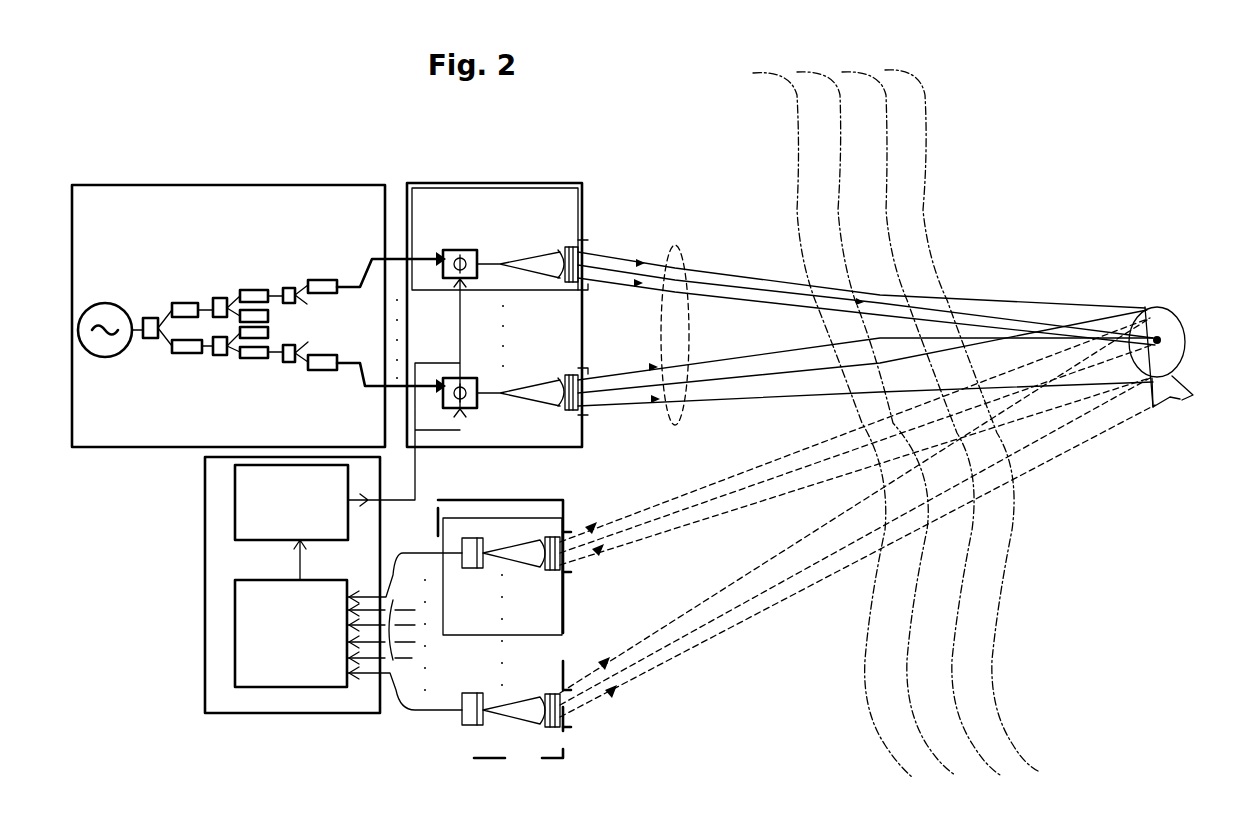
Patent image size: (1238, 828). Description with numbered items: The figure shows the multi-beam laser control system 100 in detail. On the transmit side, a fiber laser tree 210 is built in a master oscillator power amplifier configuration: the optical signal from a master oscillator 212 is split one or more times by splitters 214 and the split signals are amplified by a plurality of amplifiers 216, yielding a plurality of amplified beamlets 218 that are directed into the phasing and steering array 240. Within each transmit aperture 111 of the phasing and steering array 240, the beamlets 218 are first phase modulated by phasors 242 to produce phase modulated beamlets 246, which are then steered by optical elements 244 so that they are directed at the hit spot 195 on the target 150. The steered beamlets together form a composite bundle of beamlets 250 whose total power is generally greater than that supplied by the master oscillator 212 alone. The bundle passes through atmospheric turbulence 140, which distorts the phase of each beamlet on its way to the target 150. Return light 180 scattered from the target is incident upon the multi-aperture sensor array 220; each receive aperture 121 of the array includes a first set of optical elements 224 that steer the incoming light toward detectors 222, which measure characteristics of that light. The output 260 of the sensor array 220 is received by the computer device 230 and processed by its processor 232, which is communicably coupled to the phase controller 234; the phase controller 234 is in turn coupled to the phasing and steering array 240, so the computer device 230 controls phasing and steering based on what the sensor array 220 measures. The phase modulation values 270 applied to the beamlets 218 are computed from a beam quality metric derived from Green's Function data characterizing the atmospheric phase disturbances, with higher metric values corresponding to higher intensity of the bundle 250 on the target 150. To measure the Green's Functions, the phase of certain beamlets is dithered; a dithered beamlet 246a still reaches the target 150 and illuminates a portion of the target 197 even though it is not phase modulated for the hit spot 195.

The multi-beam laser control system 100 is at (86, 166).
The fiber laser tree 210 is at (272, 185).
The master oscillator 212 is at (90, 304).
The splitters 214 is at (147, 318).
The amplifiers 216 is at (186, 303).
The beamlets 218 is at (395, 257).
The phasing and steering array 240 is at (445, 183).
The transmit apertures 111 is at (520, 188).
The phasors 242 is at (455, 258).
The optical elements 244 is at (541, 251).
The phase modulated beamlets 246 is at (496, 258).
The dithered beamlet 246a is at (480, 408).
The composite bundle of beamlets 250 is at (686, 250).
The turbulence 140 is at (896, 407).
The target 150 is at (1170, 385).
The hit spot 195 is at (1160, 338).
The portion of the target 197 is at (1145, 307).
The return light 180 is at (1083, 420).
The computer device 230 is at (262, 713).
The processor 232 is at (291, 613).
The phase controller 234 is at (291, 502).
The phase modulation values 270 is at (420, 478).
The receive signal lines 260 is at (408, 713).
The multi-aperture sensor array 220 is at (497, 758).
The receive apertures 121 is at (540, 518).
The detectors 222 is at (490, 572).
The optical elements 224 is at (553, 572).